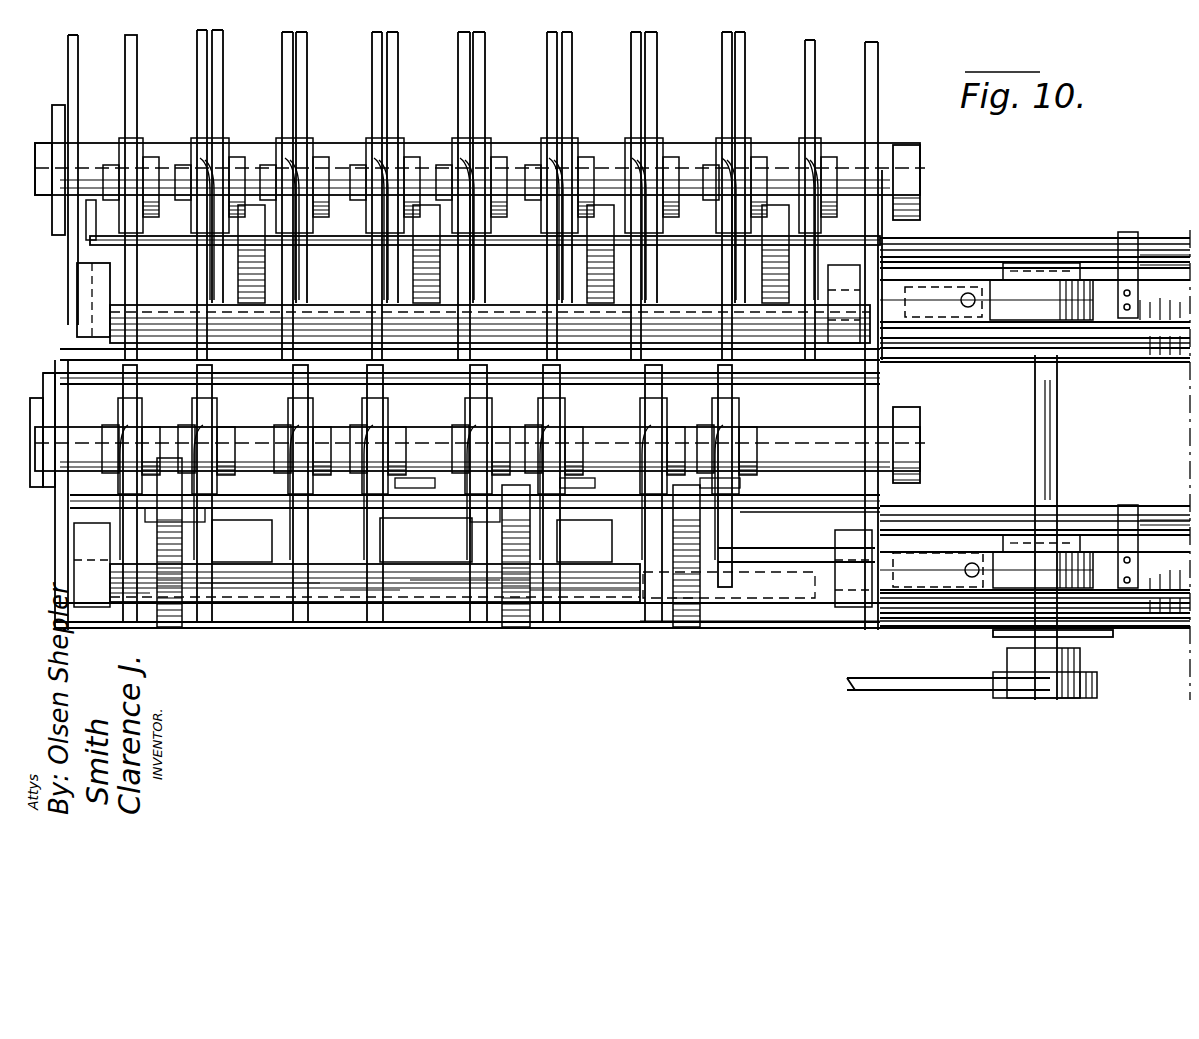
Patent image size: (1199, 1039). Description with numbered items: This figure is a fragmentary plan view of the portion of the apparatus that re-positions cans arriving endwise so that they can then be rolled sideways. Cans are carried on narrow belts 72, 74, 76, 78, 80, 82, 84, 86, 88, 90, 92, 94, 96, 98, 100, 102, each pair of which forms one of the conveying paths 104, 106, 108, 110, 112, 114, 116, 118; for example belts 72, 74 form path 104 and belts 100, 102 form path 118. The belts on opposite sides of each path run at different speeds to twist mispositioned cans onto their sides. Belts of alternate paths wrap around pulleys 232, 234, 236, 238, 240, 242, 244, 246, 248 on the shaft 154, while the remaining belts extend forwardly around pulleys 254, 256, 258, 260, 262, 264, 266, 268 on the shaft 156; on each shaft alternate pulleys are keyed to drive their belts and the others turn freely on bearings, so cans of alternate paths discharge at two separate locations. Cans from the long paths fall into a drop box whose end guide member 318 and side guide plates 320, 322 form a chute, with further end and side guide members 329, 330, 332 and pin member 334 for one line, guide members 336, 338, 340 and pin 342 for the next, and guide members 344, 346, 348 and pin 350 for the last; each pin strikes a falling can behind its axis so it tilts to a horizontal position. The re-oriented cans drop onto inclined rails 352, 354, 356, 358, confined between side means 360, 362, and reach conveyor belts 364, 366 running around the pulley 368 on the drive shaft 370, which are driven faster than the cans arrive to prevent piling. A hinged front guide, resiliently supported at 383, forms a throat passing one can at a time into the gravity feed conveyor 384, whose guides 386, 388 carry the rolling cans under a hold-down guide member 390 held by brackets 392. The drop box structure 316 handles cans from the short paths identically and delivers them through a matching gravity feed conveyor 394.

The can conveying path 118 is at (182, 44).
The can conveying path 116 is at (270, 42).
The can conveying path 114 is at (352, 42).
The can conveying path 112 is at (443, 42).
The can conveying path 110 is at (524, 46).
The can conveying path 108 is at (610, 47).
The can conveying path 106 is at (700, 47).
The can conveying path 104 is at (784, 47).
The pulley 248 is at (118, 150).
The pulley 246 is at (175, 160).
The pulley 244 is at (300, 150).
The pulley 242 is at (310, 170).
The narrow belt 96 is at (215, 150).
The narrow belt 98 is at (285, 155).
The narrow belt 90 is at (390, 150).
The narrow belt 88 is at (458, 155).
The pulley 238 is at (515, 160).
The pulley 240 is at (495, 160).
The narrow belt 82 is at (565, 155).
The narrow belt 80 is at (630, 152).
The pulley 236 is at (670, 165).
The pulley 234 is at (705, 165).
The narrow belt 74 is at (740, 155).
The narrow belt 72 is at (805, 150).
The pulley 232 is at (830, 160).
The pulley shaft 154 is at (925, 178).
The narrow belt 102 is at (122, 208).
The narrow belt 100 is at (205, 218).
The narrow belt 94 is at (340, 384).
The pulley 268 is at (128, 425).
The pulley 266 is at (200, 425).
The side guide member 348 is at (240, 412).
The pulley 264 is at (275, 455).
The narrow belt 92 is at (372, 392).
The pulley 262 is at (362, 445).
The narrow belt 86 is at (475, 392).
The pulley 260 is at (475, 415).
The narrow belt 84 is at (550, 393).
The pulley 258 is at (548, 430).
The narrow belt 78 is at (640, 392).
The pulley 256 is at (640, 430).
The narrow belt 76 is at (718, 392).
The pulley 254 is at (730, 416).
The pulley shaft 156 is at (925, 450).
The side guide member 346 is at (125, 490).
The pin 350 is at (145, 530).
The side guide member 338 is at (300, 488).
The pin 342 is at (320, 510).
The side guide member 340 is at (385, 485).
The pin member 334 is at (495, 505).
The side guide member 330 is at (470, 488).
The side guide plate 320 is at (630, 493).
The side guide member 332 is at (560, 490).
The side guide plate 322 is at (740, 495).
The side means 360 is at (838, 510).
The end guide member 344 is at (182, 540).
The end guide member 329 is at (502, 590).
The drop box structure 316 is at (710, 590).
The inclined rail 358 is at (140, 603).
The inclined rail 356 is at (308, 598).
The end guide member 336 is at (372, 590).
The inclined rail 354 is at (500, 590).
The end guide member 318 is at (630, 578).
The inclined rail 352 is at (660, 600).
The side means 362 is at (758, 630).
The guide 386 is at (812, 605).
The gravity feed conveyor 394 is at (1092, 226).
The drive shaft 370 is at (1052, 381).
The gravity feed conveyor 384 is at (1112, 494).
The brackets 392 is at (1128, 500).
The guide 388 is at (1148, 505).
The pulley 368 is at (1012, 545).
The conveyor belt 366 is at (985, 560).
The resilient support 383 is at (970, 585).
The conveyor belt 364 is at (995, 580).
The hold-down guide member 390 is at (1145, 590).